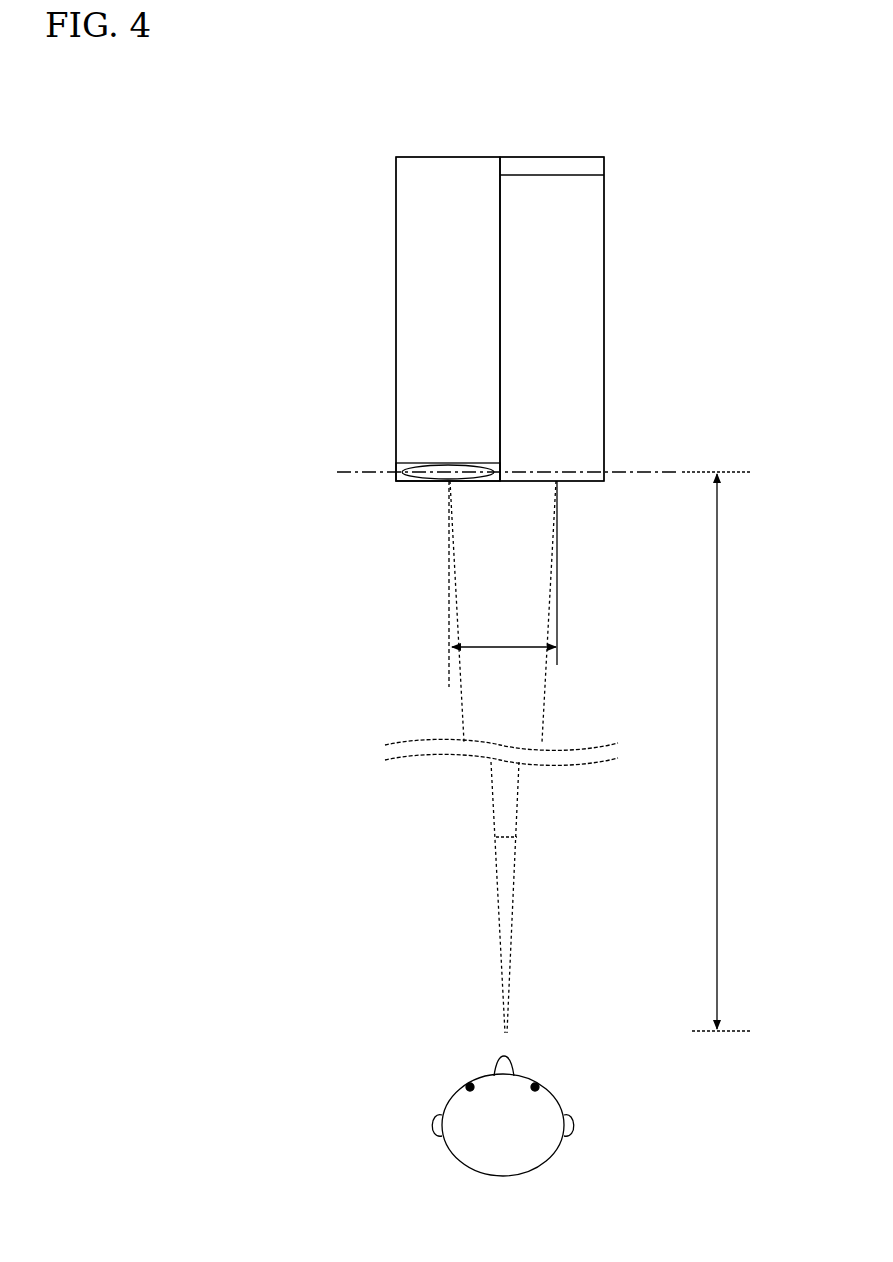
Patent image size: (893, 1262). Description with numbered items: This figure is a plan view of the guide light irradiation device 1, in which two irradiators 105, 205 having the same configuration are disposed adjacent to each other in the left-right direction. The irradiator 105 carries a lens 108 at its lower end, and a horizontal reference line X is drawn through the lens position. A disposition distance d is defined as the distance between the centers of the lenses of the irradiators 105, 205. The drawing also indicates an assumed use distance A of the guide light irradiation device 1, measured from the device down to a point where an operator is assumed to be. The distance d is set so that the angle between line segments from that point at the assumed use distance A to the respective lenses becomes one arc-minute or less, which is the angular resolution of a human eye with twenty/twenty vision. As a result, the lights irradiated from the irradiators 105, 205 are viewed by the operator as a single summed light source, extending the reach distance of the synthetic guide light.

The guide light irradiation device 1 is at (222, 190).
The irradiator 105 is at (396, 335).
The irradiator 205 is at (604, 322).
The lens 108 is at (396, 478).
The reference plane X is at (345, 472).
The disposition distance d is at (504, 628).
The assumed use distance A is at (717, 751).